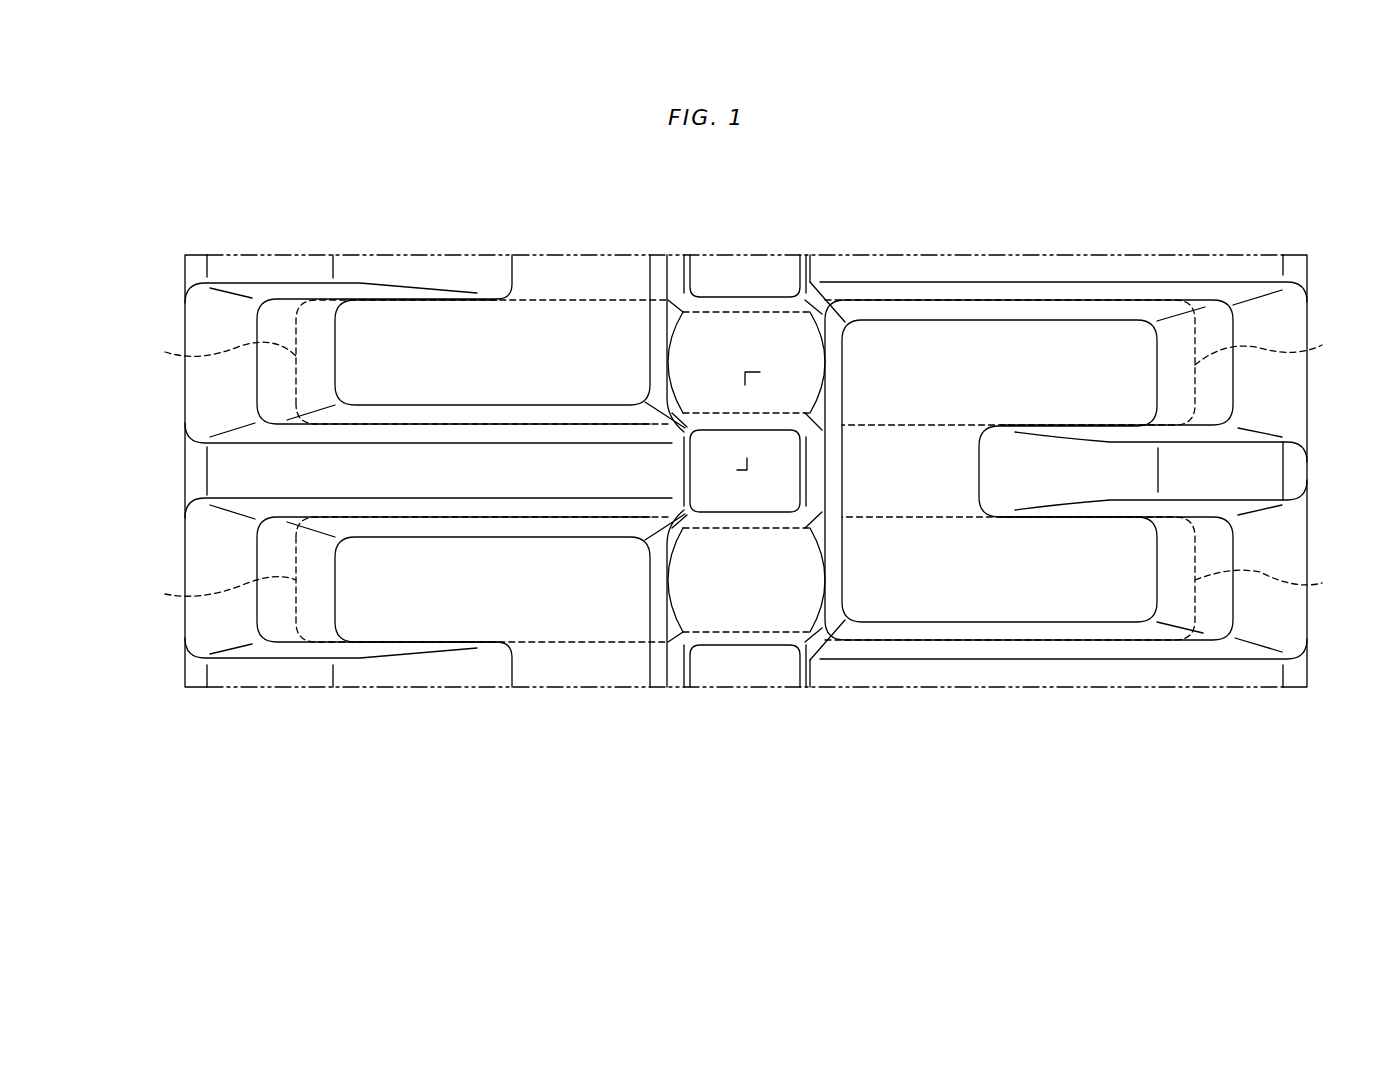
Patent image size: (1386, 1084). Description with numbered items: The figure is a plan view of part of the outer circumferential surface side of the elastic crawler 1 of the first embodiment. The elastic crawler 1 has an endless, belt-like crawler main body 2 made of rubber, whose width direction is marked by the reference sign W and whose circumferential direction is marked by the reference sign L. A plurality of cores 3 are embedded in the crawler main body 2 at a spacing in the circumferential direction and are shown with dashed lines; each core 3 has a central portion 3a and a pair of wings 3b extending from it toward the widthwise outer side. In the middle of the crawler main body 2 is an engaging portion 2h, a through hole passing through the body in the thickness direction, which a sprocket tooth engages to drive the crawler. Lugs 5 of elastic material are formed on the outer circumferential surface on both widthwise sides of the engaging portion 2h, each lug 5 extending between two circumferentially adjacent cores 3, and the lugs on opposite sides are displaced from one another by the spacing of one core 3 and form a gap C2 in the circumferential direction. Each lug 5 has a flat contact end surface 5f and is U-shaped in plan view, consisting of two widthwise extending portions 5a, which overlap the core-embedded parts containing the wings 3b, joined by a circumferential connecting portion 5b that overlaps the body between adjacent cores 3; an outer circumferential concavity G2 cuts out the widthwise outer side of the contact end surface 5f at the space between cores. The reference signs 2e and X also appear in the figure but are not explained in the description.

The elastic crawler 1 is at (256, 202).
The crawler main body 2 is at (1149, 262).
The substrate edge 2e is at (185, 262).
The engaging portion 2h is at (744, 276).
The core 3 is at (552, 296).
The central portion 3a is at (773, 310).
The wing 3b is at (746, 455).
The lug 5 is at (480, 326).
The widthwise extending portion 5a is at (1074, 312).
The circumferential connecting portion 5b is at (655, 268).
The contact end surface 5f is at (607, 278).
The outer circumferential concavity G2 is at (372, 270).
The gap C2 is at (942, 270).
The circumferential direction L is at (127, 438).
The width direction W is at (832, 790).
The axis direction X is at (150, 465).